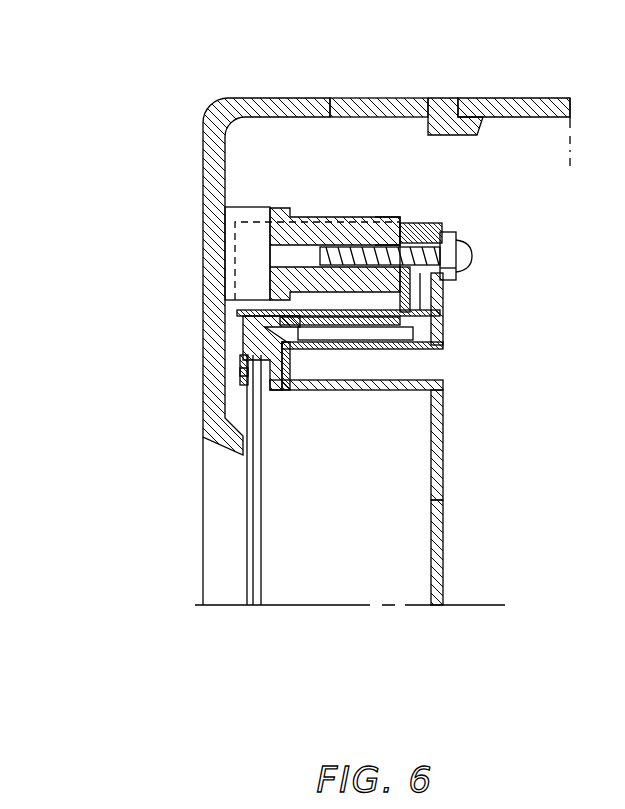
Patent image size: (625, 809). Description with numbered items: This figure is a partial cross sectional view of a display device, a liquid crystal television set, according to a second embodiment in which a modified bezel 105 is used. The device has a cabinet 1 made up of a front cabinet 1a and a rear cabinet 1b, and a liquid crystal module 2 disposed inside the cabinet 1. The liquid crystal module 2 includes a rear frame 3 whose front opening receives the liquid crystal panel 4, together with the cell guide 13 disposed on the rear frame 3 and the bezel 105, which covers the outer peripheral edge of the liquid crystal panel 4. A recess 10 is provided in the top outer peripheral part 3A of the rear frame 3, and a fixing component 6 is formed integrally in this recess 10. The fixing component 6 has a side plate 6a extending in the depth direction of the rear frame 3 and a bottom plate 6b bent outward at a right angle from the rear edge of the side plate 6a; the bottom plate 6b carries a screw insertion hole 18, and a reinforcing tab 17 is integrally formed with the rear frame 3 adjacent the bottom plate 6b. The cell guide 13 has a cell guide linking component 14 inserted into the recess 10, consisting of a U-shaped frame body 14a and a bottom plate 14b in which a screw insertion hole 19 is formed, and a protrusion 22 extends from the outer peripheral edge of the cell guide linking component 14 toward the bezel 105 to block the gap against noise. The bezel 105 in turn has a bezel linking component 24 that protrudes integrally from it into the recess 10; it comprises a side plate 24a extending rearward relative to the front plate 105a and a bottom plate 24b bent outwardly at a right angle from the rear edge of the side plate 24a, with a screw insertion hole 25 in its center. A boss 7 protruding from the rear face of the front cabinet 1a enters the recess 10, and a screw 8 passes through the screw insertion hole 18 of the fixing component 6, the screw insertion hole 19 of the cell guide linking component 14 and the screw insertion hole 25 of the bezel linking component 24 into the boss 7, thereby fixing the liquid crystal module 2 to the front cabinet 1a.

The cabinet 1 is at (484, 78).
The front cabinet 1a is at (420, 110).
The rear cabinet 1b is at (514, 89).
The liquid crystal module 2 is at (443, 497).
The rear frame 3 is at (443, 560).
The outer peripheral part 3A is at (448, 318).
The liquid crystal panel 4 is at (262, 572).
The fixing component 6 is at (417, 375).
The side plate 6a is at (407, 327).
The bottom plate 6b is at (380, 343).
The boss 7 is at (305, 222).
The screw 8 is at (472, 258).
The recess 10 is at (315, 298).
The cell guide 13 is at (272, 392).
The cell guide linking component 14 is at (352, 412).
The U-shaped frame body 14a is at (352, 322).
The bottom plate 14b is at (362, 330).
The reinforcing tab 17 is at (470, 238).
The screw insertion hole 18 is at (462, 278).
The screw insertion hole 19 is at (440, 223).
The protrusion 22 is at (252, 330).
The bezel linking component 24 is at (315, 240).
The side plate 24a is at (318, 245).
The bottom plate 24b is at (355, 245).
The screw insertion hole 25 is at (386, 222).
The bezel 105 is at (240, 382).
The front plate 105a is at (240, 372).